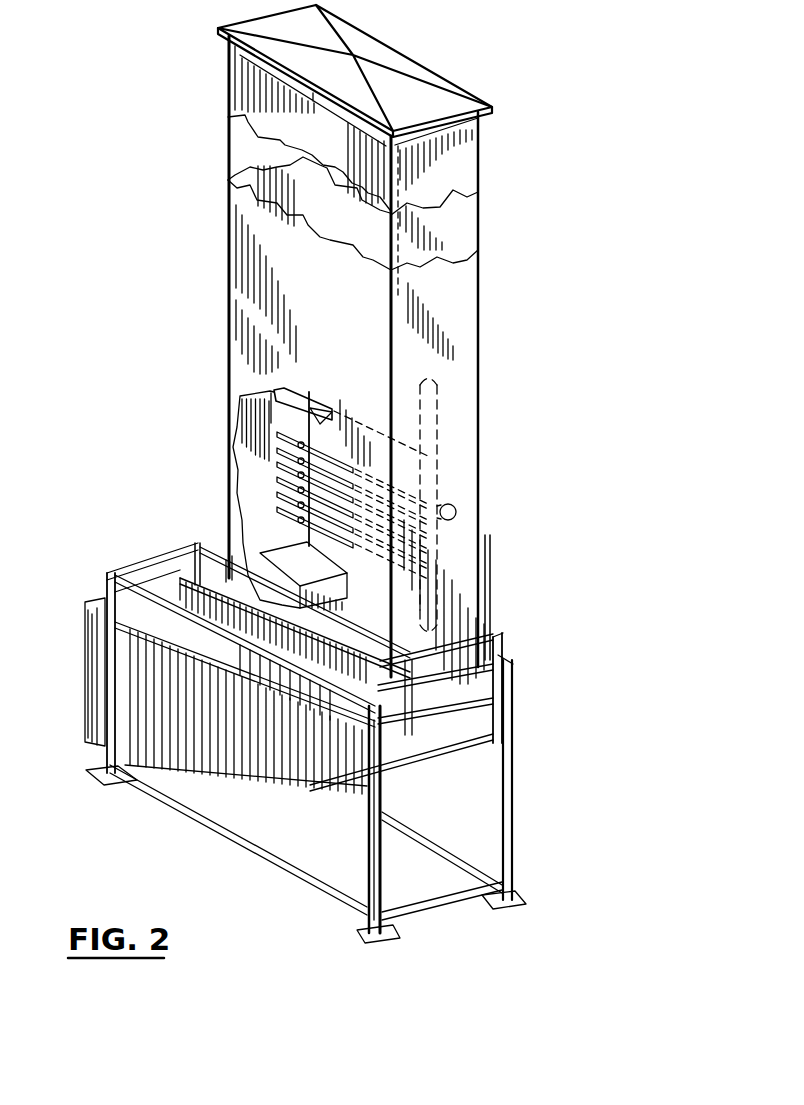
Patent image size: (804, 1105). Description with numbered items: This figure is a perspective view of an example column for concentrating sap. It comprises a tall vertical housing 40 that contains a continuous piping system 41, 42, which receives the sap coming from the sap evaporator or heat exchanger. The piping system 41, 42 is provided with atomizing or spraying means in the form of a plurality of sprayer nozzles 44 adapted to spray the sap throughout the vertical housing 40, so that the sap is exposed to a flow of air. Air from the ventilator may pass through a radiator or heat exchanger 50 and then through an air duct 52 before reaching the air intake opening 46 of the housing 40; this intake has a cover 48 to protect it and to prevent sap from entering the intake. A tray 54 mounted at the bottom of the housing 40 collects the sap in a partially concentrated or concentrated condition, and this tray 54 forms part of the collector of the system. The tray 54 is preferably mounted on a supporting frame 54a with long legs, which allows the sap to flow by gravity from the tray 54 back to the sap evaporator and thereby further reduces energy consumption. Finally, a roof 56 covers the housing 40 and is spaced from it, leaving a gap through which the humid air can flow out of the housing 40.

The vertical housing 40 is at (483, 320).
The continuous piping system 41 is at (446, 375).
The continuous piping system 42 is at (276, 397).
The sprayer nozzles 44 is at (297, 445).
The air intake opening 46 is at (230, 552).
The cover 48 is at (290, 548).
The radiator or heat exchanger 50 is at (97, 700).
The air duct 52 is at (243, 750).
The tray 54 is at (477, 694).
The supporting frame 54a is at (512, 850).
The roof 56 is at (414, 70).